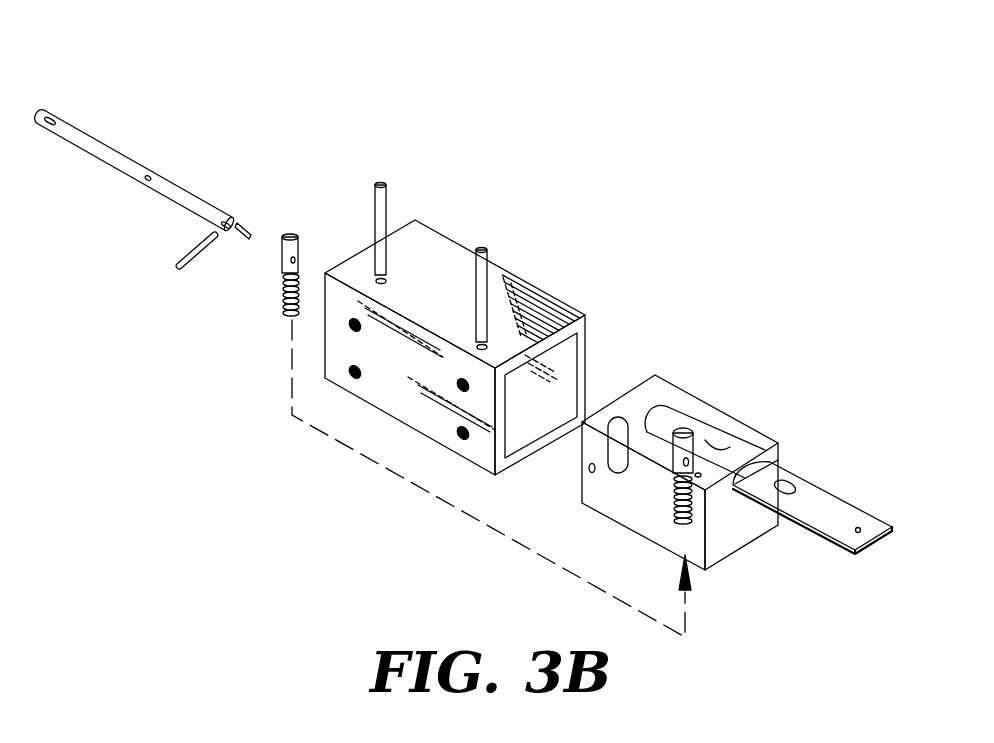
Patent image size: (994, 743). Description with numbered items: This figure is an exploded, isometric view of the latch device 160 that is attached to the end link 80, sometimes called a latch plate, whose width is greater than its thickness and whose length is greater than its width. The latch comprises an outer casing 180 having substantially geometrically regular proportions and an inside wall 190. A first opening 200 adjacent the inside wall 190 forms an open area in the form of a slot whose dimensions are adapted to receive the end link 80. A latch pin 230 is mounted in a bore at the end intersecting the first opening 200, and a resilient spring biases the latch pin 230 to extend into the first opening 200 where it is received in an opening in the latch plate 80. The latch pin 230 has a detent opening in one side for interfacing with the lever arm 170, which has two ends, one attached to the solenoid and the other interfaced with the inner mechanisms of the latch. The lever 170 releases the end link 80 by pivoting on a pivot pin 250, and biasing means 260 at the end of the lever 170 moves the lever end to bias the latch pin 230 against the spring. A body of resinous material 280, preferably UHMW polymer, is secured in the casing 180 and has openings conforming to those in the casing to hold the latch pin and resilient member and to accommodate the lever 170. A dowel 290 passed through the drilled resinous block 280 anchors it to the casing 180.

The end link 80 is at (878, 540).
The latch device 160 is at (505, 380).
The lever arm 170 is at (82, 128).
The outer casing 180 is at (587, 318).
The inside wall 190 is at (518, 372).
The first opening 200 is at (752, 433).
The latch pin 230 is at (291, 236).
The pivot pin 250 is at (197, 253).
The biasing means 260 is at (250, 230).
The body of resinous material 280 is at (714, 495).
The dowel 290 is at (487, 257).